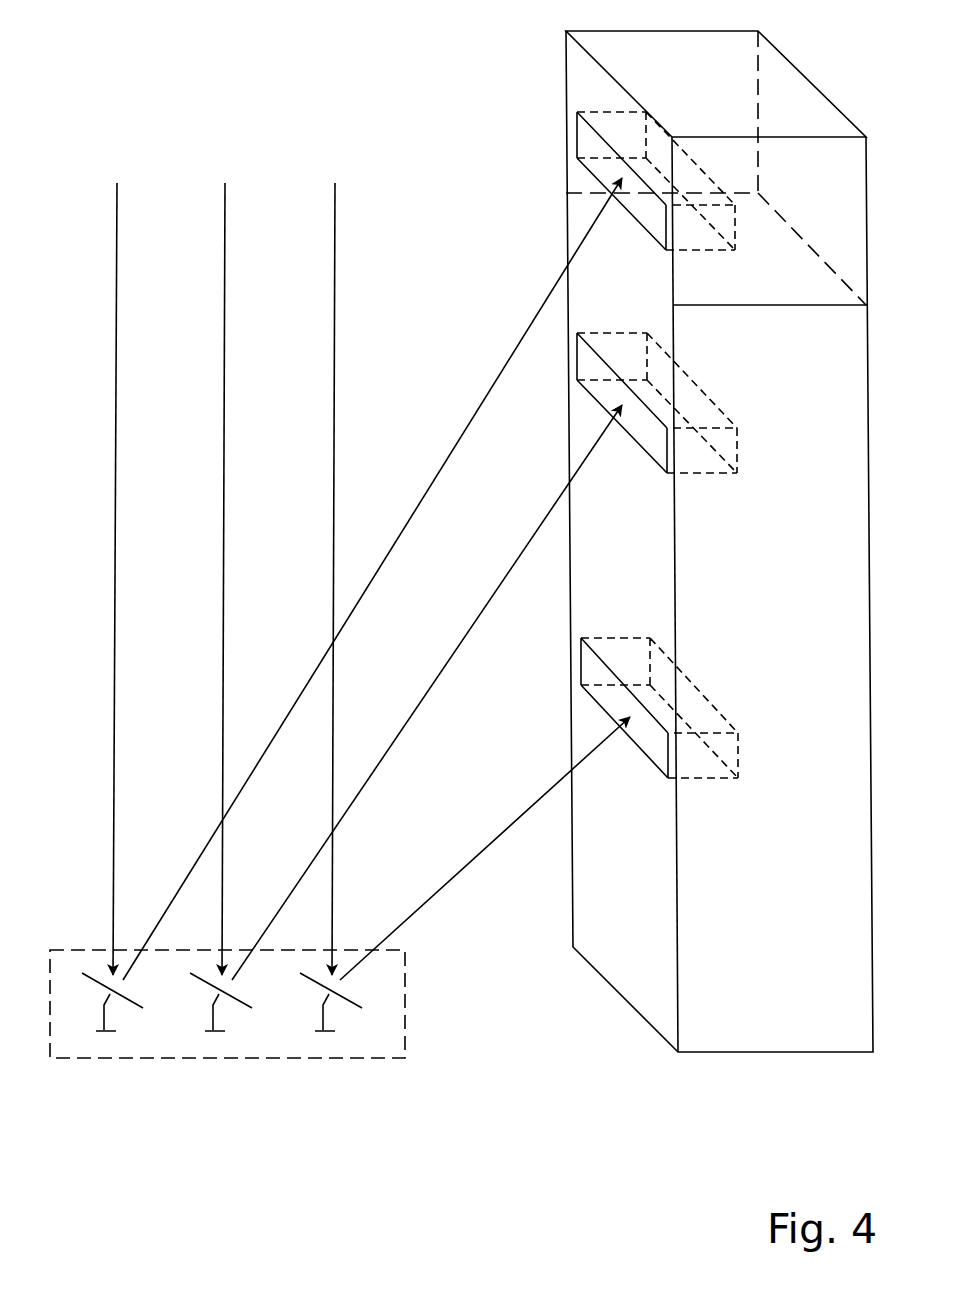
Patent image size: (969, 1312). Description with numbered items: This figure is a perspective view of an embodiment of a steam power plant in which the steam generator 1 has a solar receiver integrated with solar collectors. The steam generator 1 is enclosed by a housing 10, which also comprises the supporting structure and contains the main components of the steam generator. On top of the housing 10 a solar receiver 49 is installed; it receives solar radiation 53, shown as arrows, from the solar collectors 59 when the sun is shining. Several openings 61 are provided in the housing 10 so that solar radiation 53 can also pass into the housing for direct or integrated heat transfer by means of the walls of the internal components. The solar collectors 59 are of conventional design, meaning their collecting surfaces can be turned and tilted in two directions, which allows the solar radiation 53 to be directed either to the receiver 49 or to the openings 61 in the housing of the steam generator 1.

The steam generator 1 is at (545, 863).
The housing 10 is at (791, 946).
The solar receiver 49 is at (793, 110).
The solar radiation 53 is at (447, 458).
The solar collectors 59 is at (143, 1008).
The openings 61 is at (662, 448).